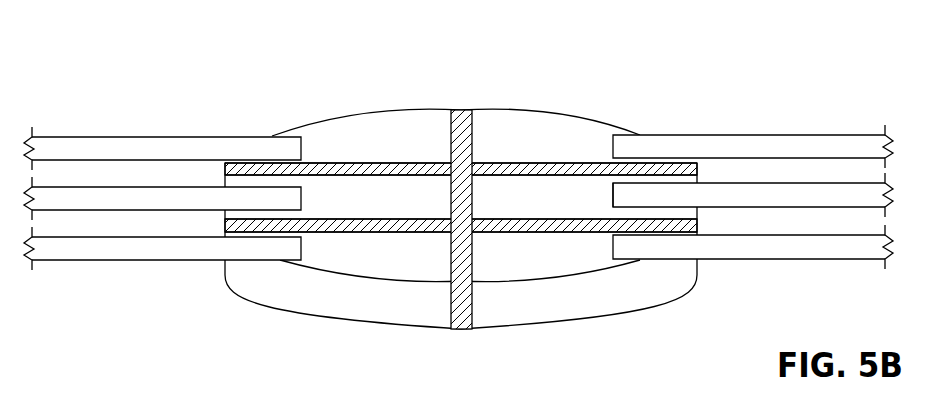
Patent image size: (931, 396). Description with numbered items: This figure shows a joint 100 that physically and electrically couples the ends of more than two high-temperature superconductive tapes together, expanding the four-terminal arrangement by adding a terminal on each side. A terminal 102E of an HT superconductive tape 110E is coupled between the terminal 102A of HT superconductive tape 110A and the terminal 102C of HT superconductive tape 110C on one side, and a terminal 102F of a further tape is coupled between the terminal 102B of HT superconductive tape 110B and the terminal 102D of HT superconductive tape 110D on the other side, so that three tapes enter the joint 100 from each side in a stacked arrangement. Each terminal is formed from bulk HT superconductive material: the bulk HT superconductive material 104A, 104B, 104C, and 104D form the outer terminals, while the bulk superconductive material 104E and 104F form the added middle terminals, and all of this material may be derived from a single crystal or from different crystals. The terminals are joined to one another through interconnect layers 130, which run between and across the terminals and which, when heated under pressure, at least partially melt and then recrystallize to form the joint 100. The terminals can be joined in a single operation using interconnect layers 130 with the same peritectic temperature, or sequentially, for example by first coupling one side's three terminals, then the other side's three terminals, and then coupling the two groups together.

The joint 100 is at (139, 40).
The terminal 102A is at (322, 92).
The terminal 102B is at (591, 90).
The terminal 102C is at (326, 354).
The terminal 102D is at (589, 354).
The terminal 102E is at (327, 224).
The terminal 102F is at (592, 226).
The bulk HT superconductive material 104A is at (409, 150).
The bulk HT superconductive material 104B is at (547, 149).
The bulk HT superconductive material 104C is at (413, 265).
The bulk HT superconductive material 104D is at (551, 265).
The bulk superconductive material 104E is at (413, 209).
The bulk superconductive material 104F is at (549, 208).
The HT superconductive tape 110A is at (155, 136).
The HT superconductive tape 110B is at (772, 135).
The HT superconductive tape 110C is at (155, 260).
The HT superconductive tape 110D is at (772, 259).
The HT superconductive tape 110E is at (153, 210).
The interconnect layers 130 is at (463, 110).